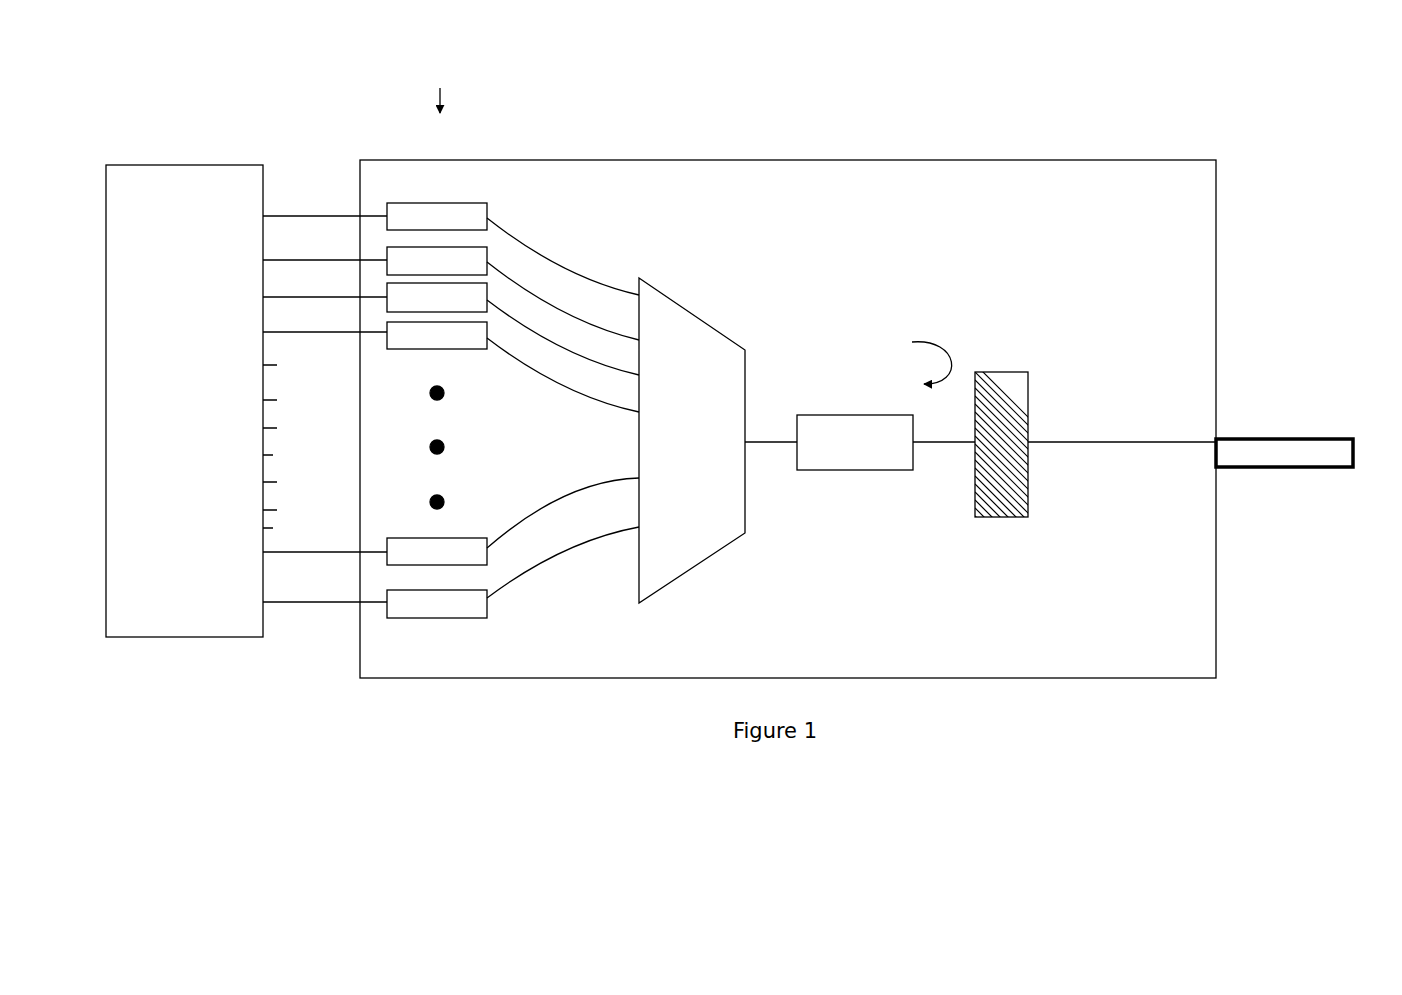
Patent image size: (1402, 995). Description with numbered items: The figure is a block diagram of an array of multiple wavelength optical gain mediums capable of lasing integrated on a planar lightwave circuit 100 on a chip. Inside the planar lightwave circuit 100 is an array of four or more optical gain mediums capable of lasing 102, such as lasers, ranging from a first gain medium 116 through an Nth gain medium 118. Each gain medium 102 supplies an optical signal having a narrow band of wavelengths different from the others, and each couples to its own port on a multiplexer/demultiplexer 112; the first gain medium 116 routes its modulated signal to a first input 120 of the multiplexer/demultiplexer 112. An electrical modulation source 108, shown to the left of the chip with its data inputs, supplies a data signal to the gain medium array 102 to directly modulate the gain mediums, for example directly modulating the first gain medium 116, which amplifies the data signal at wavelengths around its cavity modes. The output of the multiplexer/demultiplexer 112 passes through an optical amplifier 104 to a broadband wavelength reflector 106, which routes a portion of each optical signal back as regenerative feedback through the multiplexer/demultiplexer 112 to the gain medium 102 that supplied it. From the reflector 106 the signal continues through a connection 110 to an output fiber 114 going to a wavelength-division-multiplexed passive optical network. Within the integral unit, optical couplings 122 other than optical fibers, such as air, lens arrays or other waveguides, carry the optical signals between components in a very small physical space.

The planar lightwave circuit 100 is at (1132, 657).
The optical gain mediums capable of lasing 102 is at (397, 173).
The optical amplifier 104 is at (889, 480).
The broadband wavelength reflector 106 is at (1047, 480).
The electrical modulation source 108 is at (204, 541).
The connection to an output fiber 110 is at (1170, 426).
The multiplexer/demultiplexer 112 is at (671, 526).
The output fiber 114 is at (1262, 485).
The first gain medium capable of lasing 116 is at (467, 181).
The Nth gain medium capable of lasing 118 is at (438, 625).
The first input of the multiplexer/demultiplexer 120 is at (621, 259).
The optical couplings 122 is at (585, 560).